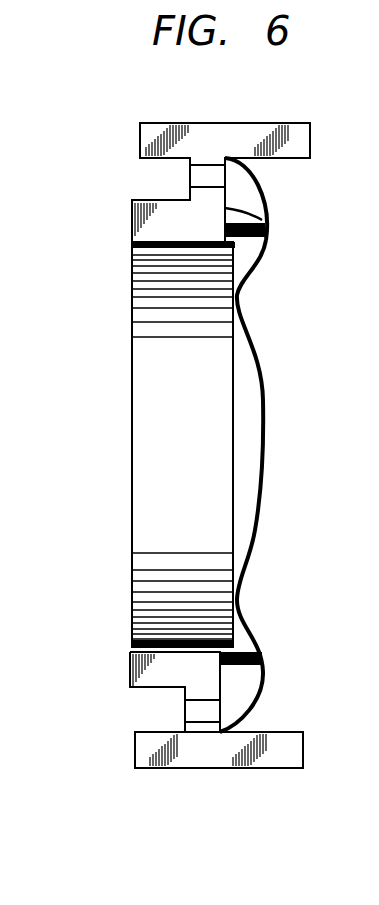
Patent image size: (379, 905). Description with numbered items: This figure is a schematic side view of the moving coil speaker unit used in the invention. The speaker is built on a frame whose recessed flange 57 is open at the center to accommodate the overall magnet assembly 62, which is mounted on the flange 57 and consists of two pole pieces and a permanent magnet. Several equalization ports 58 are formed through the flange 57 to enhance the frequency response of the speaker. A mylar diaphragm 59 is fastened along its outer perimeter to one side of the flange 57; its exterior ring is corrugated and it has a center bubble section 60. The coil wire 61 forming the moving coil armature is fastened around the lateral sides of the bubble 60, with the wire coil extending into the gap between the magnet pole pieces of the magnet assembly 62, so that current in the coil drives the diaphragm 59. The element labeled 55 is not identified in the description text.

The lower mounting bracket 55 is at (245, 768).
The recessed flange 57 is at (262, 220).
The equalization ports 58 is at (188, 199).
The mylar diaphragm 59 is at (263, 204).
The center bubble section 60 is at (262, 455).
The coil wire 61 is at (237, 665).
The magnet assembly 62 is at (150, 460).